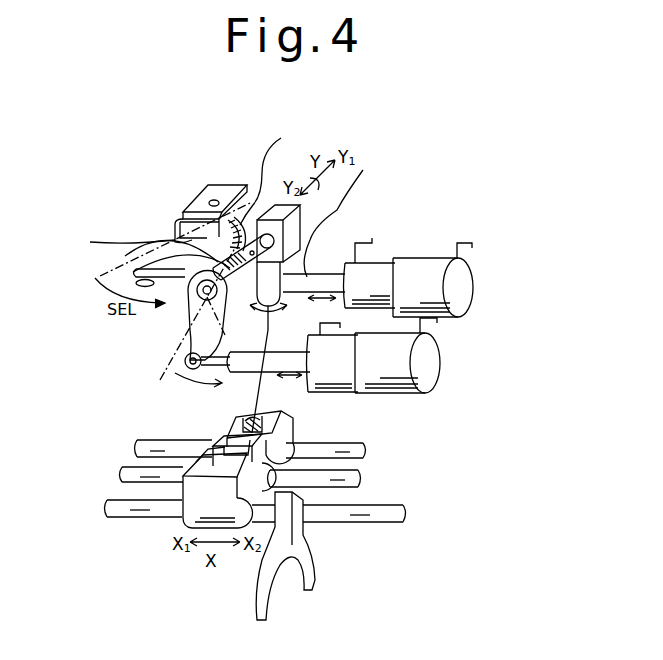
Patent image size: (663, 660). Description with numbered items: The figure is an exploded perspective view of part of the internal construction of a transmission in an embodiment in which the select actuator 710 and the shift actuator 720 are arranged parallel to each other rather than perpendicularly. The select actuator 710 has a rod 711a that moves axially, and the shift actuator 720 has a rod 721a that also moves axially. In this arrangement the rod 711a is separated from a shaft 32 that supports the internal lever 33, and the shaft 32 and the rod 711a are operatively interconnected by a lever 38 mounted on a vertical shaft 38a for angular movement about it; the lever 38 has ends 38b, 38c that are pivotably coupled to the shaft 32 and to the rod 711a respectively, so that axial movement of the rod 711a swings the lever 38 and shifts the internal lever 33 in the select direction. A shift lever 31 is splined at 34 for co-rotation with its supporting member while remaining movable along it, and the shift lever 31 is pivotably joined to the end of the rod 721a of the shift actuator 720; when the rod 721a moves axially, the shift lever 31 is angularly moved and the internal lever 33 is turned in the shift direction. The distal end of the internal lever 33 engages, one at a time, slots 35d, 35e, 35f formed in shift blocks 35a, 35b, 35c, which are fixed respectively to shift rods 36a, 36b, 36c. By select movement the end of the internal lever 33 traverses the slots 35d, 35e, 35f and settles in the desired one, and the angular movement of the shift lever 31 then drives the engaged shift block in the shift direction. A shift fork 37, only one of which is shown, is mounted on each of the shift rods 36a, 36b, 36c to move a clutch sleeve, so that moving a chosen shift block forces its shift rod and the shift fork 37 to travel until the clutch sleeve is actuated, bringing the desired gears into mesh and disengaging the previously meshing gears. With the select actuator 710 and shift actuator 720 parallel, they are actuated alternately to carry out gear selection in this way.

The shift lever 31 is at (188, 318).
The shaft 32 is at (302, 212).
The internal lever 33 is at (300, 235).
The spline 34 is at (180, 247).
The lever 38 is at (167, 262).
The vertical shaft 38a is at (272, 171).
The end of lever 38b is at (333, 223).
The end of lever 38c is at (100, 276).
The select actuator 710 is at (423, 263).
The rod of select actuator 711a is at (323, 275).
The shift actuator 720 is at (410, 395).
The rod of shift actuator 721a is at (248, 377).
The shift block 35a is at (293, 422).
The shift block 35b is at (278, 460).
The shift block 35c is at (180, 522).
The slot 35d is at (225, 425).
The slot 35e is at (212, 442).
The slot 35f is at (198, 465).
The shift rod 36a is at (345, 447).
The shift rod 36b is at (358, 474).
The shift rod 36c is at (393, 523).
The shift fork 37 is at (300, 562).